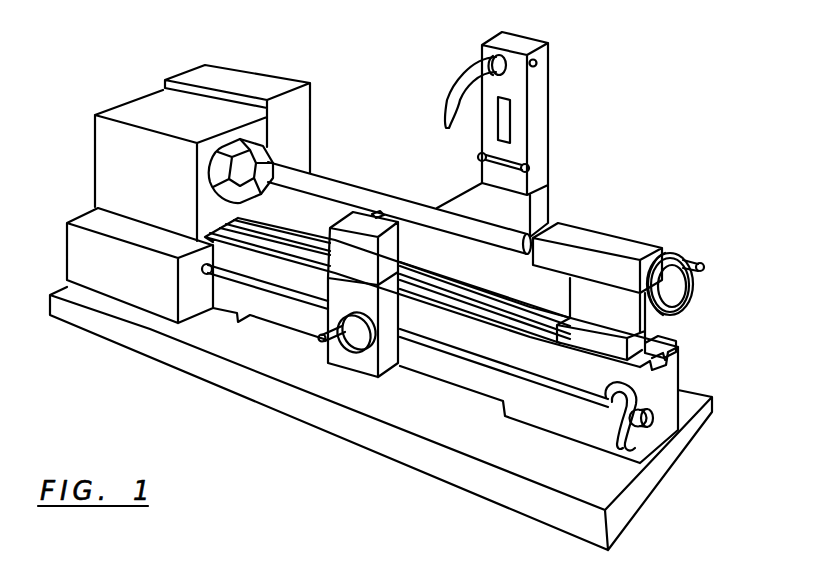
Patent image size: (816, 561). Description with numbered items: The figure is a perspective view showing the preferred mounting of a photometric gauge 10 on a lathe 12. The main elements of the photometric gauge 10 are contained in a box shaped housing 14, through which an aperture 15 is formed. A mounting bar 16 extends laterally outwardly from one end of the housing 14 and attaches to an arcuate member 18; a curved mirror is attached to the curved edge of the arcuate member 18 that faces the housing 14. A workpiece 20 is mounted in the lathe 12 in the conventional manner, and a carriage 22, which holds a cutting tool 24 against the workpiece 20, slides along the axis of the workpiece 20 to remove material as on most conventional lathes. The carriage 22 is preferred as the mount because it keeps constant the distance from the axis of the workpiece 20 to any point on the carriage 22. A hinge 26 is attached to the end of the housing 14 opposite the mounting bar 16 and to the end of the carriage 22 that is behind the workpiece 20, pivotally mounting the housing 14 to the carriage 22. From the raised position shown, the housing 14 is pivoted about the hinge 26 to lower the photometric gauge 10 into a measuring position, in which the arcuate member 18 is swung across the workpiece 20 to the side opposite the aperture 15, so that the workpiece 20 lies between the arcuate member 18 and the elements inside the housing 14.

The photometric gauge 10 is at (527, 118).
The lathe 12 is at (153, 71).
The box shaped housing 14 is at (549, 90).
The aperture 15 is at (508, 122).
The mounting bar 16 is at (483, 44).
The arcuate member 18 is at (456, 85).
The workpiece 20 is at (448, 211).
The carriage 22 is at (345, 255).
The cutting tool 24 is at (380, 212).
The hinge 26 is at (530, 170).